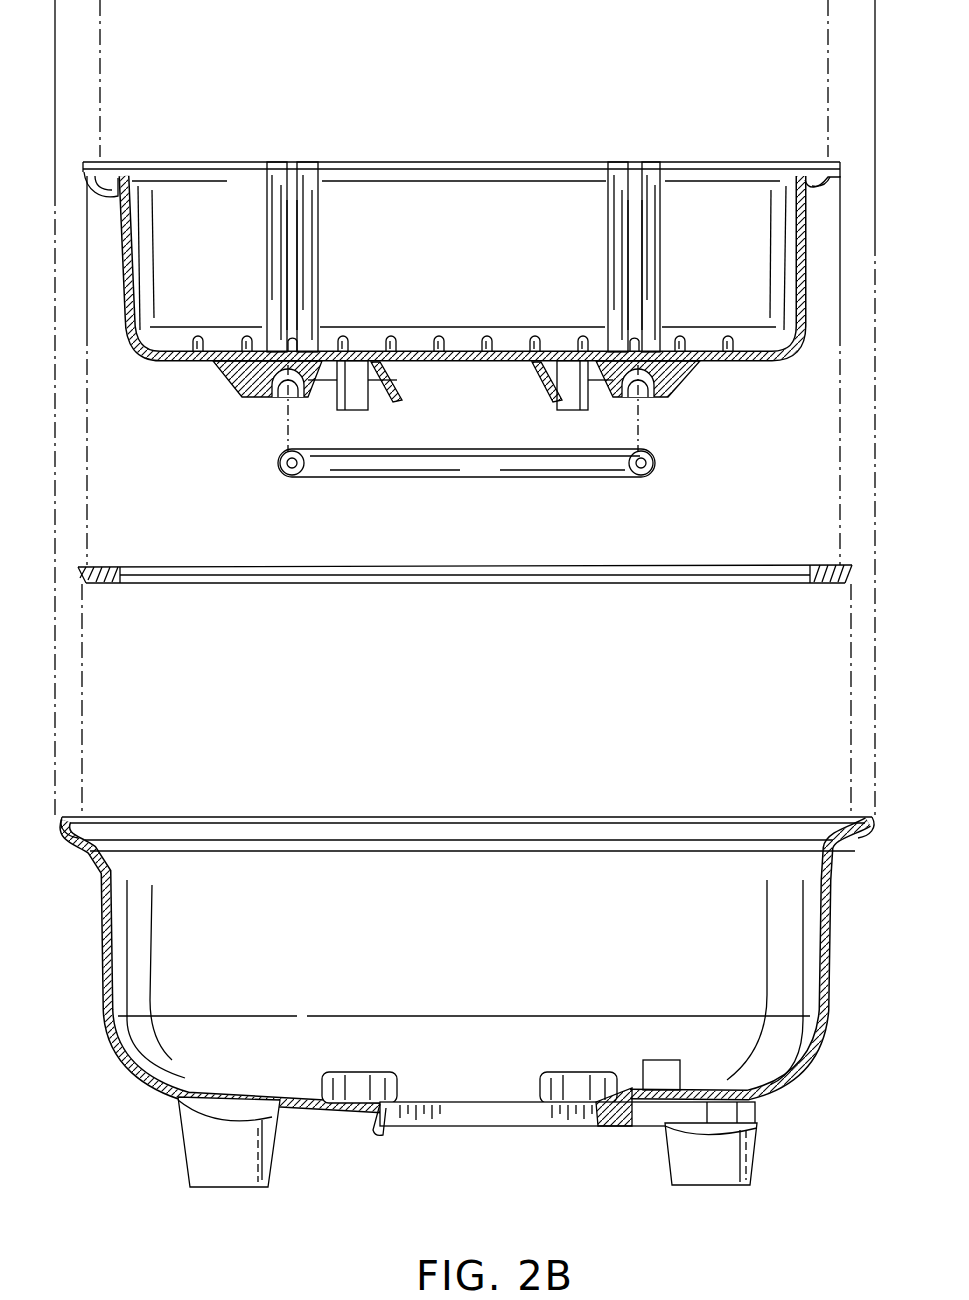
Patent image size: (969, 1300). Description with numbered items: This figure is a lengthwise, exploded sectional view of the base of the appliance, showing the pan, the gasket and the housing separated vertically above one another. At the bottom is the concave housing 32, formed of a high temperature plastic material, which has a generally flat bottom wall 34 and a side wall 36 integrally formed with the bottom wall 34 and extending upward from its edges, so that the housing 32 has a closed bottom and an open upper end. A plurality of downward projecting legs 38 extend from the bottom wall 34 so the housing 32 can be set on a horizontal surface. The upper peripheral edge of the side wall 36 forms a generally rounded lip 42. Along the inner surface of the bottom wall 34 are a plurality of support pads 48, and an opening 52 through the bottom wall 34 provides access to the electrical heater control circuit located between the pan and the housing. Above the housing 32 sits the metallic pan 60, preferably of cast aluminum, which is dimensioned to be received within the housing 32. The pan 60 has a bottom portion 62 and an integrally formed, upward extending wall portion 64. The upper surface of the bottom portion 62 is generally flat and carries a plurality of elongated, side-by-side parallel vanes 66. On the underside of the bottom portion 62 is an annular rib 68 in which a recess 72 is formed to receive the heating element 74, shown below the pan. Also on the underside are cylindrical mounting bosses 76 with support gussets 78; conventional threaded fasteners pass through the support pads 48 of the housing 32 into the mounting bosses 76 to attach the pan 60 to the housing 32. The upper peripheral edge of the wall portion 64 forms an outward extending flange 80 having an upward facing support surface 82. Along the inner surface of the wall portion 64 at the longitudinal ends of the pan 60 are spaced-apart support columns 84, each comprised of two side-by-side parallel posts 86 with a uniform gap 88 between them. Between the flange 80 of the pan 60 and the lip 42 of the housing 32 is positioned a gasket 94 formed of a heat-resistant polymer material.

The housing 32 is at (374, 809).
The bottom wall 34 is at (318, 1108).
The side wall 36 is at (122, 952).
The legs 38 is at (215, 1157).
The lip 42 is at (70, 855).
The support pads 48 is at (322, 1088).
The opening 52 is at (492, 1118).
The pan 60 is at (212, 372).
The bottom portion 62 is at (497, 366).
The wall portion 64 is at (138, 241).
The vanes 66 is at (443, 336).
The annular rib 68 is at (668, 368).
The recess 72 is at (650, 396).
The heating element 74 is at (553, 478).
The mounting bosses 76 is at (350, 400).
The support gussets 78 is at (383, 386).
The flange 80 is at (133, 188).
The support surface 82 is at (118, 162).
The support columns 84 is at (321, 235).
The posts 86 is at (318, 190).
The gap 88 is at (296, 268).
The gasket 94 is at (262, 566).